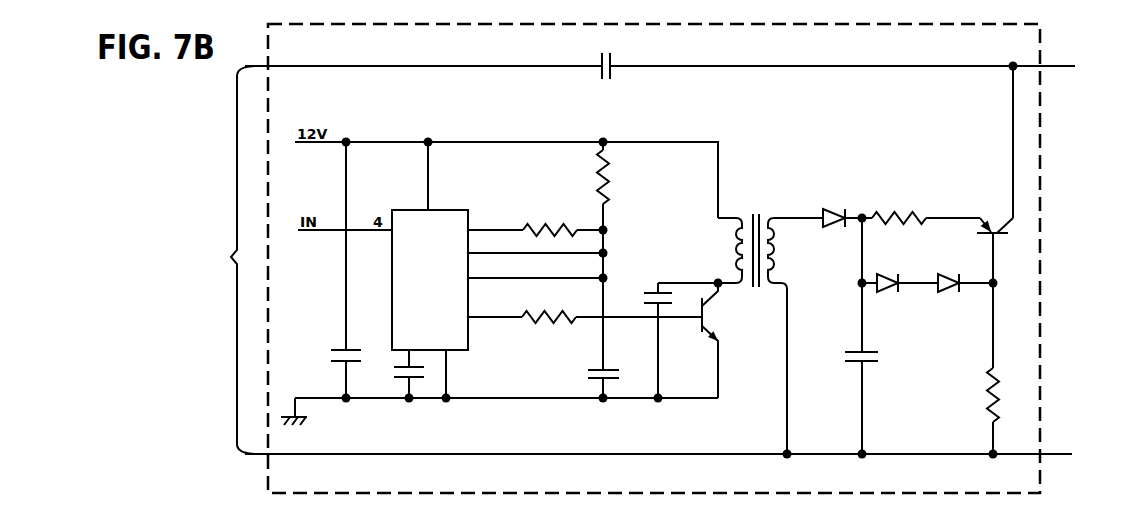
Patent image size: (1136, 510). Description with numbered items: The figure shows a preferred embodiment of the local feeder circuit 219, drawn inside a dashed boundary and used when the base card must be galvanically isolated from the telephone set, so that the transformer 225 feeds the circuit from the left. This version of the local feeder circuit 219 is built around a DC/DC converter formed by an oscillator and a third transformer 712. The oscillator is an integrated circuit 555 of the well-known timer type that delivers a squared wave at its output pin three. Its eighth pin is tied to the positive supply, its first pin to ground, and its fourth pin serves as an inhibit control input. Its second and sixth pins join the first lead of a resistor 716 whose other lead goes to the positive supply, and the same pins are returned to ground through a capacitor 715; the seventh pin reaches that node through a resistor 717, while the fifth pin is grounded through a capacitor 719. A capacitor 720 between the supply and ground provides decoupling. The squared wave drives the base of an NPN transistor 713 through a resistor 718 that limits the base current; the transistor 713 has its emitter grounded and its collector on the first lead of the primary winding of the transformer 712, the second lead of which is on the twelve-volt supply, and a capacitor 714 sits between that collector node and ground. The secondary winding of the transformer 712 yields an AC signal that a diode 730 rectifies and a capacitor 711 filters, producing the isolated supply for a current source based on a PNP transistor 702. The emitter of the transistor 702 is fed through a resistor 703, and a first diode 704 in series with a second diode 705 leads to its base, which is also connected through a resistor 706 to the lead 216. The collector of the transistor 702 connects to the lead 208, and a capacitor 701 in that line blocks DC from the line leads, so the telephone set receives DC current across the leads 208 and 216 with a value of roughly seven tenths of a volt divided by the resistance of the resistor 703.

The lead 208 is at (1057, 65).
The lead 216 is at (1057, 453).
The local feeder circuit 219 is at (264, 462).
The transformer 225 is at (228, 260).
The integrated circuit 555 is at (467, 197).
The capacitor 701 is at (613, 63).
The PNP transistor 702 is at (997, 236).
The resistor 703 is at (921, 223).
The first diode 704 is at (900, 290).
The second diode 705 is at (961, 290).
The resistor 706 is at (993, 371).
The capacitor 711 is at (866, 363).
The third transformer 712 is at (775, 216).
The NPN transistor 713 is at (727, 295).
The capacitor 714 is at (649, 292).
The capacitor 715 is at (612, 367).
The resistor 716 is at (606, 155).
The resistor 717 is at (525, 226).
The resistor 718 is at (534, 310).
The capacitor 719 is at (402, 369).
The capacitor 720 is at (345, 357).
The diode 730 is at (840, 211).